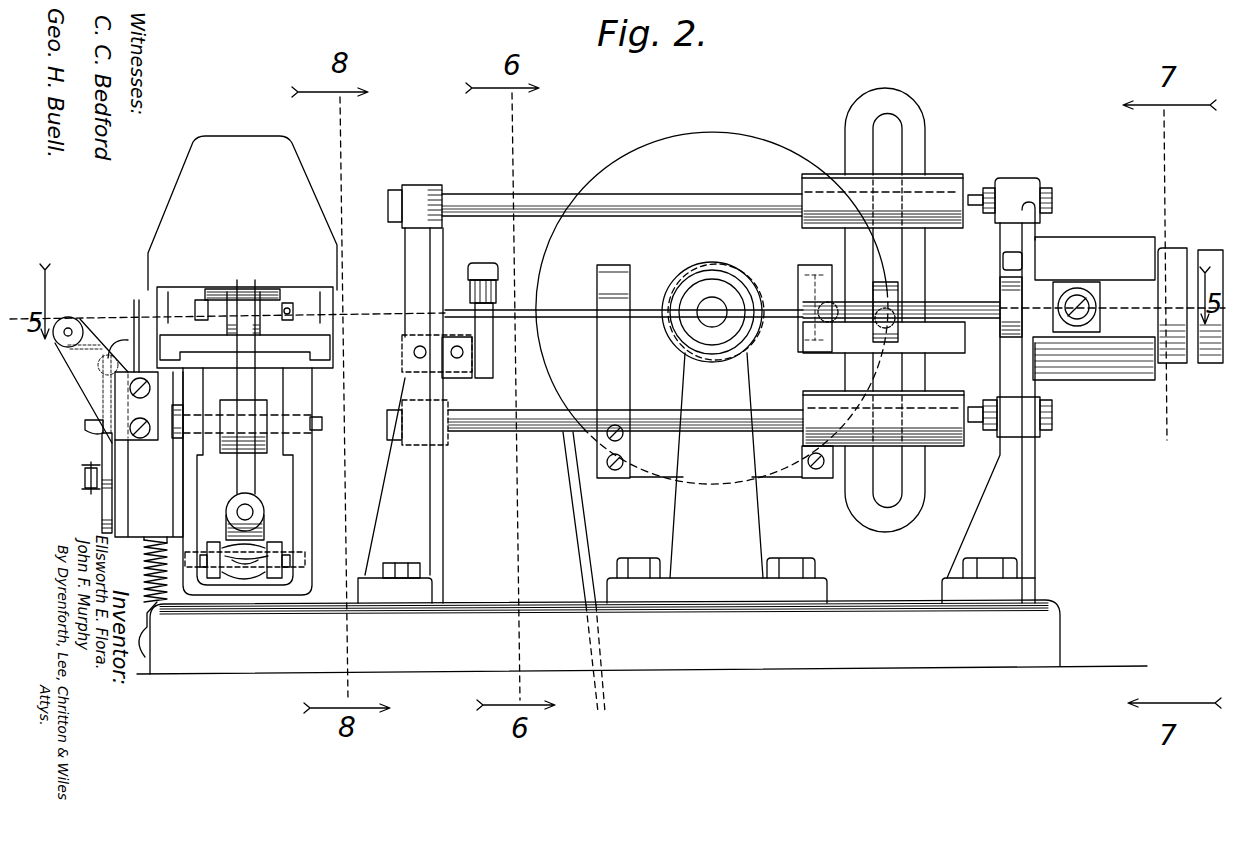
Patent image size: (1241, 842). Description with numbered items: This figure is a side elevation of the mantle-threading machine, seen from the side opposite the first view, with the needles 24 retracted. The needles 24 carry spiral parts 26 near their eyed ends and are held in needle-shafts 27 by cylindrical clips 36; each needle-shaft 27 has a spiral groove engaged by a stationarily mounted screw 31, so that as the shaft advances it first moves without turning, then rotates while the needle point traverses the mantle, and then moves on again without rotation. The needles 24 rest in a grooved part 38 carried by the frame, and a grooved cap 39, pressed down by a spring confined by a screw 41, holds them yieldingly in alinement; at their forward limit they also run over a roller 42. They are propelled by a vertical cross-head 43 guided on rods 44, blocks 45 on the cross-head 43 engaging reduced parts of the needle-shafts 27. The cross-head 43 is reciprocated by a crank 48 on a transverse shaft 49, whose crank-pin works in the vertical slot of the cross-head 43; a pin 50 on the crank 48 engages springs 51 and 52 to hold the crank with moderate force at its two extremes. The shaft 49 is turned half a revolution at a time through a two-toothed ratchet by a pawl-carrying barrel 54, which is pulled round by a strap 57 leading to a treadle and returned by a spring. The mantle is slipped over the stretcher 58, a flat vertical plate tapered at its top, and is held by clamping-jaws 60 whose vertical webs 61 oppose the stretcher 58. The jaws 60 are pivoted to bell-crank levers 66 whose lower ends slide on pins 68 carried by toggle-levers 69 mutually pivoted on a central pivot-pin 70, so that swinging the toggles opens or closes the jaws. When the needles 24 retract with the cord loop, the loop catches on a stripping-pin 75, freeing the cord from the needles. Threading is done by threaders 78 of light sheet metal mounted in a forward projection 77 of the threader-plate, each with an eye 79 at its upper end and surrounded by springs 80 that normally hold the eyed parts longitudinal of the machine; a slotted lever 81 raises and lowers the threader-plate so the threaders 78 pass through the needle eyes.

The needles 24 is at (552, 314).
The spiral parts 26 is at (398, 310).
The needle-shafts 27 is at (950, 300).
The screws 31 is at (1085, 308).
The cylindrical clips 36 is at (850, 305).
The grooved part 38 is at (480, 357).
The grooved cap 39 is at (498, 292).
The screw 41 is at (475, 263).
The roller 42 is at (75, 320).
The cross-head 43 is at (906, 110).
The rods 44 is at (558, 194).
The blocks 45 is at (905, 335).
The crank 48 is at (730, 290).
The transverse shaft 49 is at (712, 312).
The pin 50 is at (727, 312).
The spring 51 is at (612, 348).
The spring 52 is at (818, 374).
The barrel 54 is at (712, 308).
The strap 57 is at (580, 545).
The stretcher 58 is at (242, 213).
The clamping-jaws 60 is at (186, 331).
The vertical web 61 is at (296, 303).
The bell-crank lever 66 is at (247, 465).
The pins 68 is at (262, 511).
The toggle-levers 69 is at (277, 578).
The central pivot-pin 70 is at (290, 556).
The stripping-pin 75 is at (147, 283).
The forward projection 77 is at (98, 447).
The threaders 78 is at (136, 345).
The eye 79 is at (81, 369).
The springs 80 is at (88, 412).
The lever 81 is at (100, 500).